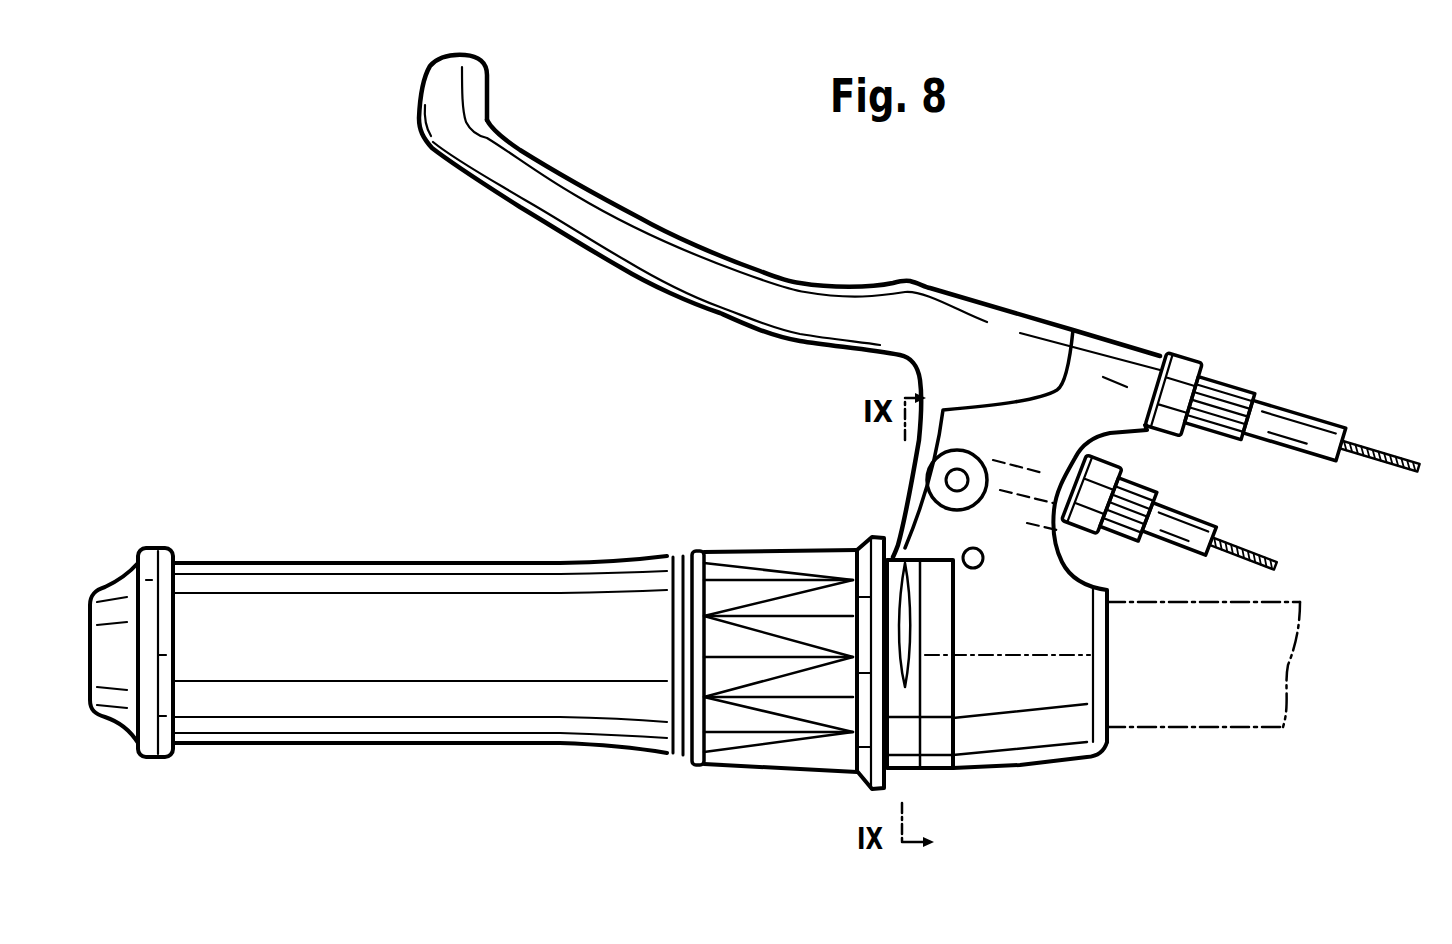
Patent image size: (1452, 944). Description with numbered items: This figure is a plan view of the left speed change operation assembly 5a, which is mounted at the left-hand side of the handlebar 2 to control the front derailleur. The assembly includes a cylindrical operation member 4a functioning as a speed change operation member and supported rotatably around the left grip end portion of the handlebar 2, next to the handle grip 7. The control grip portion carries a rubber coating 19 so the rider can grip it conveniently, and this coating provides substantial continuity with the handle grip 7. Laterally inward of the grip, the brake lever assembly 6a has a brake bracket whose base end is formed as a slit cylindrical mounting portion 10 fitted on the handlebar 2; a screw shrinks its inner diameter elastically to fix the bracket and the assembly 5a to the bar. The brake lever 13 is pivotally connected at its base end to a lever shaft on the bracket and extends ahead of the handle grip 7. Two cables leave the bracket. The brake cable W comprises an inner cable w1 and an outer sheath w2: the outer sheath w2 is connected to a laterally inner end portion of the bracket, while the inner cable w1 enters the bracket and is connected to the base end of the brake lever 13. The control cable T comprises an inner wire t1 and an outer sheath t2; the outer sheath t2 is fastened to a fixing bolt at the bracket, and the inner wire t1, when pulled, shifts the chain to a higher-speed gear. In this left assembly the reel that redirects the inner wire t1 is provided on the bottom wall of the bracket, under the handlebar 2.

The handlebar 2 is at (1233, 730).
The cylindrical operation member 4a is at (751, 767).
The speed change operation assembly 5a is at (315, 443).
The brake lever assembly 6a is at (1111, 300).
The handle grip 7 is at (386, 745).
The cylindrical mounting portion 10 is at (1043, 764).
The brake lever 13 is at (667, 232).
The rubber coating 19 is at (773, 548).
The inner wire t1 is at (1250, 550).
The outer sheath t2 is at (1167, 547).
The control cable T is at (1247, 653).
The inner cable w1 is at (1400, 477).
The outer sheath w2 is at (1317, 467).
The brake cable W is at (1420, 528).